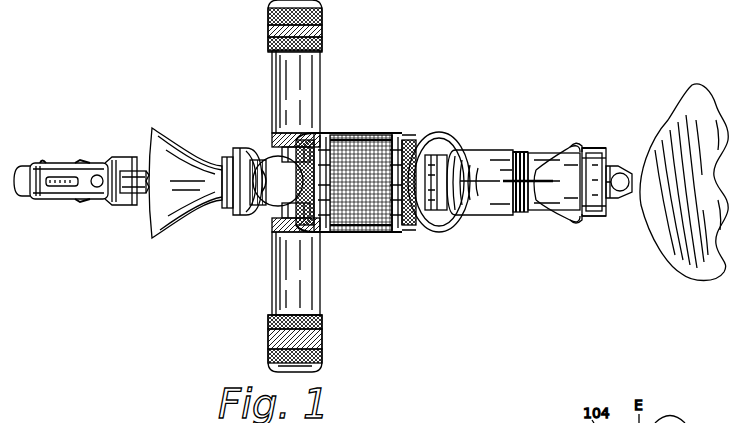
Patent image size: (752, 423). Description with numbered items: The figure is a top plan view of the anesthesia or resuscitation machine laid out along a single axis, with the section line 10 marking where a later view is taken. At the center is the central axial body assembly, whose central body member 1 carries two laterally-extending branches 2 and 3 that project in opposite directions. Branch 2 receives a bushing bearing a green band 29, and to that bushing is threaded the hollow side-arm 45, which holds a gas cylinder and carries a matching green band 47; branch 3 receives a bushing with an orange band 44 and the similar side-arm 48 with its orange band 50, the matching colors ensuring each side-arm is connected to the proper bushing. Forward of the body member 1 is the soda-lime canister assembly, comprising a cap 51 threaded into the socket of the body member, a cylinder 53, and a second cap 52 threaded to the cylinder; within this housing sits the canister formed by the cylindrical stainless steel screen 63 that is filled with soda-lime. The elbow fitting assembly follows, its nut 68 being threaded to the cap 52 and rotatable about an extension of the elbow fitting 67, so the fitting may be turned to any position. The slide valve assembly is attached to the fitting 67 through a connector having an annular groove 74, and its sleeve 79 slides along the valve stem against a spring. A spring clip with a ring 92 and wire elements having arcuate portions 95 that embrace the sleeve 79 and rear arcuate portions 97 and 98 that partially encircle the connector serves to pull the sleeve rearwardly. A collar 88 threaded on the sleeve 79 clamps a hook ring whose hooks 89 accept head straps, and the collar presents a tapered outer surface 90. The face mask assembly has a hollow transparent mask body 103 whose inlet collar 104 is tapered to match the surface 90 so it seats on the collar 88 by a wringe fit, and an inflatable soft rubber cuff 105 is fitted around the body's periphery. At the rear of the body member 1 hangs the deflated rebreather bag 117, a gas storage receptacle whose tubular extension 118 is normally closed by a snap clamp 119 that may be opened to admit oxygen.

The central body member 1 is at (258, 210).
The branch 2 is at (272, 228).
The branch 3 is at (267, 160).
The section line 10 is at (440, 240).
The band 29 is at (300, 230).
The band 44 is at (274, 146).
The side-arm 45 is at (320, 293).
The band 47 is at (322, 332).
The side-arm 48 is at (320, 92).
The band 50 is at (322, 28).
The cap 51 is at (314, 138).
The cap 52 is at (434, 132).
The cylinder 53 is at (374, 134).
The cylindrical screen 63 is at (388, 234).
The elbow fitting 67 is at (482, 200).
The nut 68 is at (446, 228).
The annular groove 74 is at (522, 151).
The sleeve 79 is at (547, 150).
The collar 88 is at (606, 226).
The hooks 89 is at (594, 220).
The outer surface 90 is at (600, 145).
The ring 92 is at (550, 212).
The arcuate portions 95 is at (590, 148).
The arcuate portion 97 is at (516, 150).
The arcuate portion 98 is at (520, 214).
The mask body 103 is at (604, 152).
The inlet collar 104 is at (604, 146).
The inflatable cuff 105 is at (690, 86).
The rebreather bag 117 is at (185, 218).
The tubular extension 118 is at (136, 165).
The snap clamp 119 is at (62, 201).